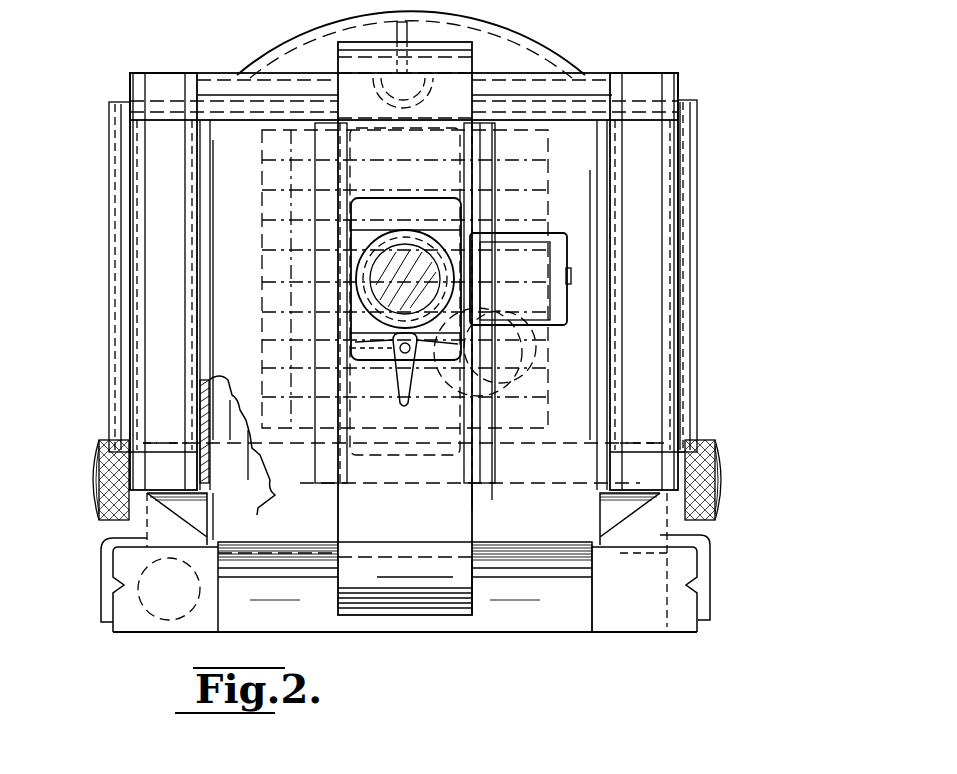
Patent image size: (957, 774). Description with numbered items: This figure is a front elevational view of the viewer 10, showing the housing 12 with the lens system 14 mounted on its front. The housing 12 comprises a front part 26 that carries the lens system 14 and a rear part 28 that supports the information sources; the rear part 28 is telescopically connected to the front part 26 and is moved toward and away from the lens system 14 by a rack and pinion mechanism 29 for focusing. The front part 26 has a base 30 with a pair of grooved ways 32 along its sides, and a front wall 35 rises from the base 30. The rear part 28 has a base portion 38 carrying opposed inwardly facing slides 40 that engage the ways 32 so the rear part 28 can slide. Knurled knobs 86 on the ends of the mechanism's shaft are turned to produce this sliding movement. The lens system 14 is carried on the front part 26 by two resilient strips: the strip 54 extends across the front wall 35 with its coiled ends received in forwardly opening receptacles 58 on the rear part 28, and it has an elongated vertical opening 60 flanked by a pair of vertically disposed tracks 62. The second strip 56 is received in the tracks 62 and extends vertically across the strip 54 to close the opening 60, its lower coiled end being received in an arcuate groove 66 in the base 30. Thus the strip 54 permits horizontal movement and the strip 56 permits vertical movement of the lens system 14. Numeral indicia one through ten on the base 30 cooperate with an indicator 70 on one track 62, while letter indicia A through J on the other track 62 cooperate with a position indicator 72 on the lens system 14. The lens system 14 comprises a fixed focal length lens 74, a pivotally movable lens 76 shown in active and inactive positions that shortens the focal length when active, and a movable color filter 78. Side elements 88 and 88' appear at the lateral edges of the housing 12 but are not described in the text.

The viewer 10 is at (580, 46).
The housing 12 is at (700, 270).
The lens system 14 is at (413, 236).
The front part 26 is at (702, 624).
The rear part 28 is at (712, 567).
The rack and pinion mechanism 29 is at (727, 473).
The base 30 is at (167, 625).
The grooved way 32 is at (113, 590).
The front wall 35 is at (222, 380).
The base portion 38 is at (262, 490).
The slide 40 is at (101, 575).
The strip of resilient material 54 is at (262, 222).
The strip of resilient material 56 is at (420, 615).
The forwardly opening receptacle 58 is at (133, 88).
The elongated vertically extending opening 60 is at (360, 392).
The track 62 is at (322, 155).
The arcuate groove 66 is at (516, 560).
The indicator 70 is at (495, 500).
The position indicator 72 is at (352, 282).
The lens 74 is at (422, 275).
The lens 76 is at (520, 385).
The color filter 78 is at (528, 235).
The knurled knob 86 is at (108, 440).
The side member 88 is at (92, 277).
The side member 88' is at (719, 276).